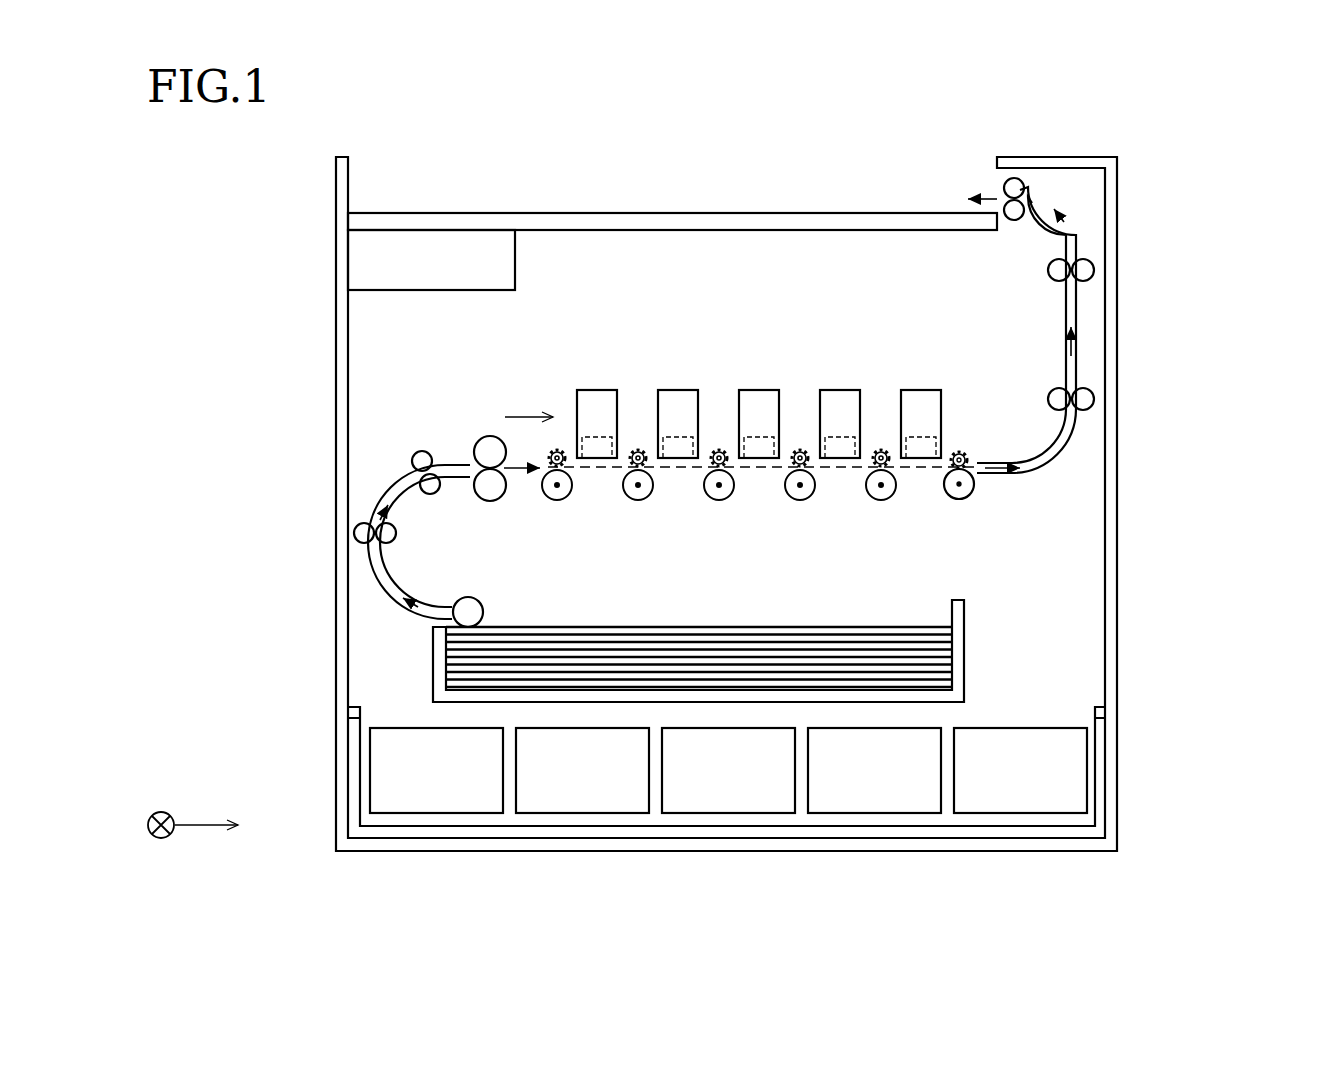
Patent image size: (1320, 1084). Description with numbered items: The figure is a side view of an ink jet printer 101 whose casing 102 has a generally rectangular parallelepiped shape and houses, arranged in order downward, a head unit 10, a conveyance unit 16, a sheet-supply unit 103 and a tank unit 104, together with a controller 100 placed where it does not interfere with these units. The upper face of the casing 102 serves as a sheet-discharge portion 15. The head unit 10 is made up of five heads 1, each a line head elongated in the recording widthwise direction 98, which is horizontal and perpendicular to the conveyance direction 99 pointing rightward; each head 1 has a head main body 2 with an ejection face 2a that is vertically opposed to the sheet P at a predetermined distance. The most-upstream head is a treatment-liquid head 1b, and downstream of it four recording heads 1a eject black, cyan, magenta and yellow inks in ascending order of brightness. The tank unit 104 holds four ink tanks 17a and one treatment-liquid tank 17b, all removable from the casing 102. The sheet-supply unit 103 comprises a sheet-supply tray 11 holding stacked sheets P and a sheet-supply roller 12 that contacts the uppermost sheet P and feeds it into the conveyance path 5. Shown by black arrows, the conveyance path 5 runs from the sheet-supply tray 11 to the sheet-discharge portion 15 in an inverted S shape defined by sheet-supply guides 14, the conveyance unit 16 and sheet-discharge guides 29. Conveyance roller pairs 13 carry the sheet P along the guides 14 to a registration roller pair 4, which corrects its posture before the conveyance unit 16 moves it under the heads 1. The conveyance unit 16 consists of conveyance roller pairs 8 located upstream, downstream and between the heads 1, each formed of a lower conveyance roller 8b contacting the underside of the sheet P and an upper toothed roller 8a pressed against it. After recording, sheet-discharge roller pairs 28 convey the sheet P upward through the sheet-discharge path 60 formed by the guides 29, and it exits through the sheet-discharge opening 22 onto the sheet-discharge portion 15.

The head 1 is at (741, 412).
The recording head 1a is at (808, 416).
The treatment-liquid head 1b is at (592, 390).
The head main body 2 is at (923, 432).
The ejection face 2a is at (921, 462).
The registration roller pair 4 is at (480, 438).
The conveyance path 5 is at (374, 530).
The conveyance roller pair 8 is at (945, 500).
The toothed roller 8a is at (960, 448).
The conveyance roller 8b is at (969, 497).
The head unit 10 is at (789, 380).
The sheet-supply tray 11 is at (965, 660).
The sheet-supply roller 12 is at (462, 598).
The conveyance roller pair 13 is at (413, 457).
The sheet-supply guide 14 is at (421, 485).
The sheet-discharge portion 15 is at (497, 213).
The conveyance unit 16 is at (740, 503).
The ink tank 17a is at (578, 815).
The treatment-liquid tank 17b is at (455, 808).
The sheet-discharge opening 22 is at (1004, 185).
The sheet-discharge roller pair 28 is at (1016, 178).
The sheet-discharge guide 29 is at (1082, 302).
The sheet-discharge path 60 is at (1088, 351).
The recording widthwise direction 98 is at (163, 812).
The conveyance direction 99 is at (222, 866).
The controller 100 is at (348, 254).
The ink jet printer 101 is at (1186, 160).
The casing 102 is at (1118, 622).
The sheet-supply unit 103 is at (535, 616).
The tank unit 104 is at (1100, 768).
The sheet P is at (843, 627).